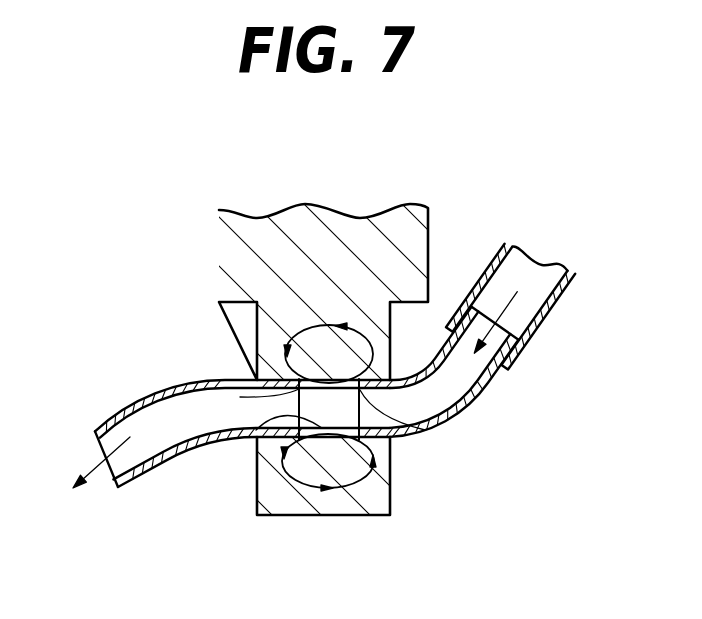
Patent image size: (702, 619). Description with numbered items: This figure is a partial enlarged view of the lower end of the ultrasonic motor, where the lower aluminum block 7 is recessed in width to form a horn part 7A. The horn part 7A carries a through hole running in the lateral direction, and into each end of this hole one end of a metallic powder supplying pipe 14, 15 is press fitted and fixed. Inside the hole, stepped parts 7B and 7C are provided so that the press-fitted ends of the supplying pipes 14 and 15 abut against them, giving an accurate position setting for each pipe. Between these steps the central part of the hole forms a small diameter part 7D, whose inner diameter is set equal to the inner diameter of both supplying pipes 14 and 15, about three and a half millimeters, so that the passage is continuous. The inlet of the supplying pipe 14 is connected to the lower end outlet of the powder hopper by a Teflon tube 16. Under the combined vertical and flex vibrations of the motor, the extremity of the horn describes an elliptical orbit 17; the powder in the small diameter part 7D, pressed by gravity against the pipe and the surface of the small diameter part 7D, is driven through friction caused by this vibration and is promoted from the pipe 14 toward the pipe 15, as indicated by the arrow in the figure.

The aluminum block 7 is at (219, 235).
The horn part 7A is at (258, 333).
The stepped part 7B is at (425, 430).
The stepped part 7C is at (232, 382).
The small diameter part 7D is at (248, 436).
The metallic powder supplying pipe 14 is at (474, 396).
The metallic powder supplying pipe 15 is at (132, 403).
The Teflon tube 16 is at (565, 301).
The elliptical orbit 17 is at (352, 488).